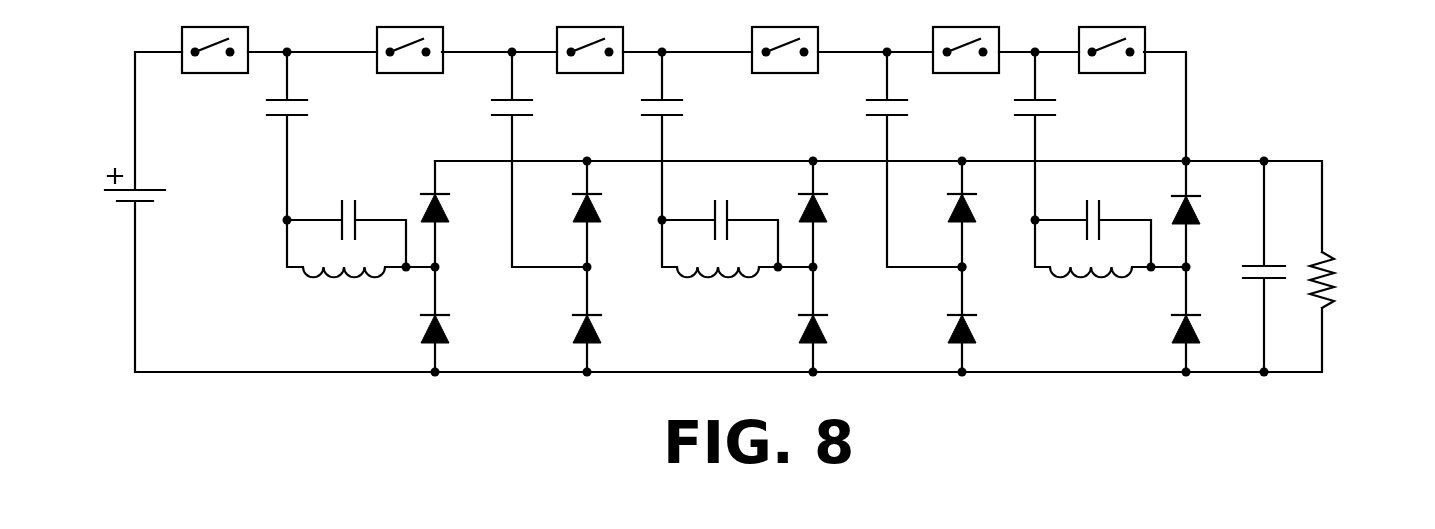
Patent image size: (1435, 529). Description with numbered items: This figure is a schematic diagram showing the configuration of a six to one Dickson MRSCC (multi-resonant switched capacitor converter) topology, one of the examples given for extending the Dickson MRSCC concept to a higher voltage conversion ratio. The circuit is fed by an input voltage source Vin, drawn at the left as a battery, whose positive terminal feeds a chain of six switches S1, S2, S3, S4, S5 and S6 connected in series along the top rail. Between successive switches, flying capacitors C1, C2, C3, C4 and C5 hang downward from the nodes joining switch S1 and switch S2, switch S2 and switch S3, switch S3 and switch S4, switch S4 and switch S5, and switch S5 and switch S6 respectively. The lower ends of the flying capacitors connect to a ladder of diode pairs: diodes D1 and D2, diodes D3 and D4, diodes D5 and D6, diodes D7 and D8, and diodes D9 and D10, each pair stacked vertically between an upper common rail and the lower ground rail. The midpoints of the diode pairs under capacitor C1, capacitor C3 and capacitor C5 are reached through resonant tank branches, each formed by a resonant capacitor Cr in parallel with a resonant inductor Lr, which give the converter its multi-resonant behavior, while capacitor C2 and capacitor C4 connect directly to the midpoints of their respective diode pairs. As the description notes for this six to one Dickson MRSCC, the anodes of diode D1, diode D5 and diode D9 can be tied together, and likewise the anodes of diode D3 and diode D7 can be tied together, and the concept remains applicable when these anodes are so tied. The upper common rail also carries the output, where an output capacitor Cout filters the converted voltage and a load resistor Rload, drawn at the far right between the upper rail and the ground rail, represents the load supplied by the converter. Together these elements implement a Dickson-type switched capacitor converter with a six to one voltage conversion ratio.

The switch S1 is at (215, 37).
The switch S2 is at (410, 37).
The switch S3 is at (590, 37).
The switch S4 is at (785, 37).
The switch S5 is at (966, 37).
The switch S6 is at (1112, 37).
The capacitor C1 is at (272, 134).
The capacitor C2 is at (527, 160).
The capacitor C3 is at (648, 134).
The capacitor C4 is at (902, 160).
The capacitor C5 is at (1020, 134).
The resonant capacitor Cr is at (345, 220).
The resonant inductor Lr is at (363, 262).
The diode D1 is at (450, 207).
The diode D2 is at (450, 329).
The diode D3 is at (603, 207).
The diode D4 is at (603, 329).
The diode D5 is at (829, 207).
The diode D6 is at (829, 329).
The diode D7 is at (978, 207).
The diode D8 is at (978, 329).
The diode D9 is at (1203, 210).
The diode D10 is at (1209, 329).
The input voltage source Vin is at (140, 200).
The output capacitor Cout is at (1241, 266).
The load resistor Rload is at (1347, 288).